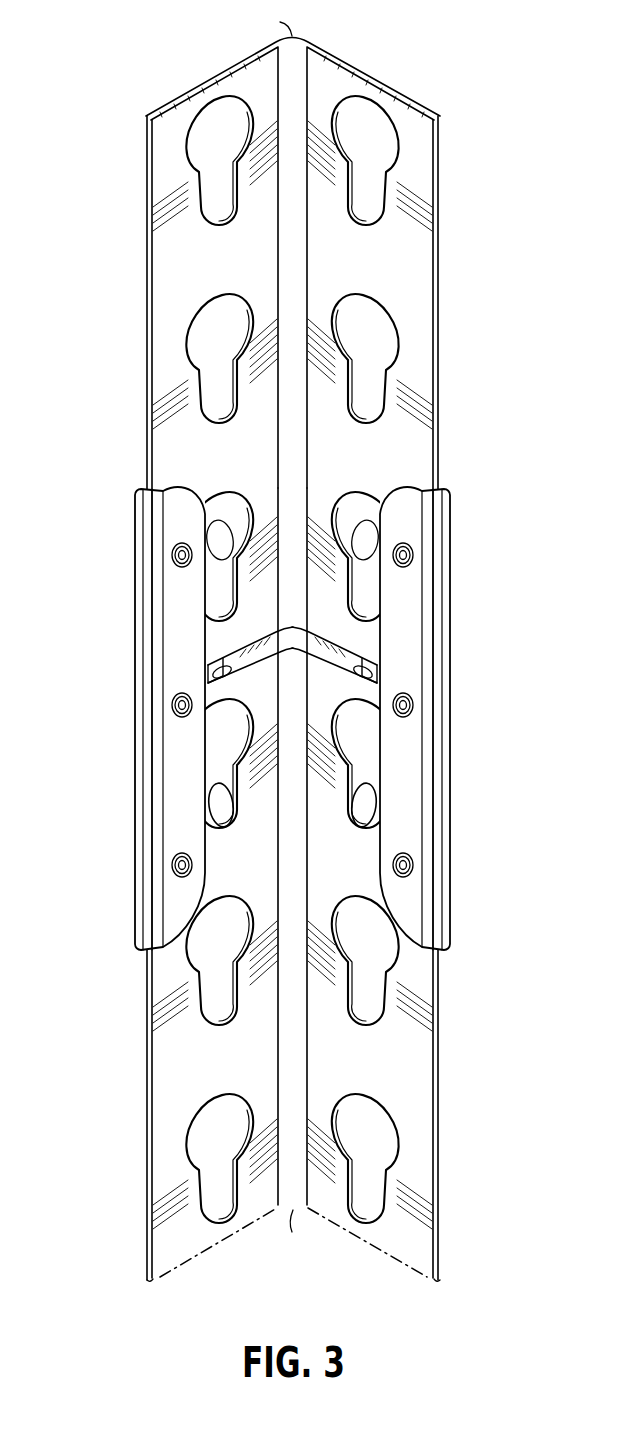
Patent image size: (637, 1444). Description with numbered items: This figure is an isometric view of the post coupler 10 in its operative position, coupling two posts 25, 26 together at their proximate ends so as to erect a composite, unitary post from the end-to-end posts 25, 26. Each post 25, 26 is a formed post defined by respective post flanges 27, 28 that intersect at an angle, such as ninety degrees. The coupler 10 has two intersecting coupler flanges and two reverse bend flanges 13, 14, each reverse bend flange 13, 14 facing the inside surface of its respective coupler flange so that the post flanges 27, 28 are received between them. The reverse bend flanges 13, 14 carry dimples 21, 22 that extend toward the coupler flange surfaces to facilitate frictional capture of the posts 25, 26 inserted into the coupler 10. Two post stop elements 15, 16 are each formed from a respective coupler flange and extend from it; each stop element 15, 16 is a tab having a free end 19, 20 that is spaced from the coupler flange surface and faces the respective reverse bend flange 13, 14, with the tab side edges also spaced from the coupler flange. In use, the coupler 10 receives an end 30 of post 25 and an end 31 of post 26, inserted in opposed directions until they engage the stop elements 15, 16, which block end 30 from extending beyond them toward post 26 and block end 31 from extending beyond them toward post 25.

The post coupler 10 is at (101, 621).
The reverse bend flange 13 is at (178, 525).
The reverse bend flange 14 is at (407, 525).
The post stop element 15 is at (254, 655).
The post stop element 16 is at (328, 655).
The free end 19 is at (232, 686).
The free end 20 is at (353, 686).
The dimple 21 is at (172, 565).
The dimple 22 is at (412, 565).
The post 25 is at (146, 291).
The post 26 is at (146, 1117).
The post flange 27 is at (172, 336).
The post flange 28 is at (413, 335).
The end of post 30 is at (208, 686).
The end of post 31 is at (210, 690).